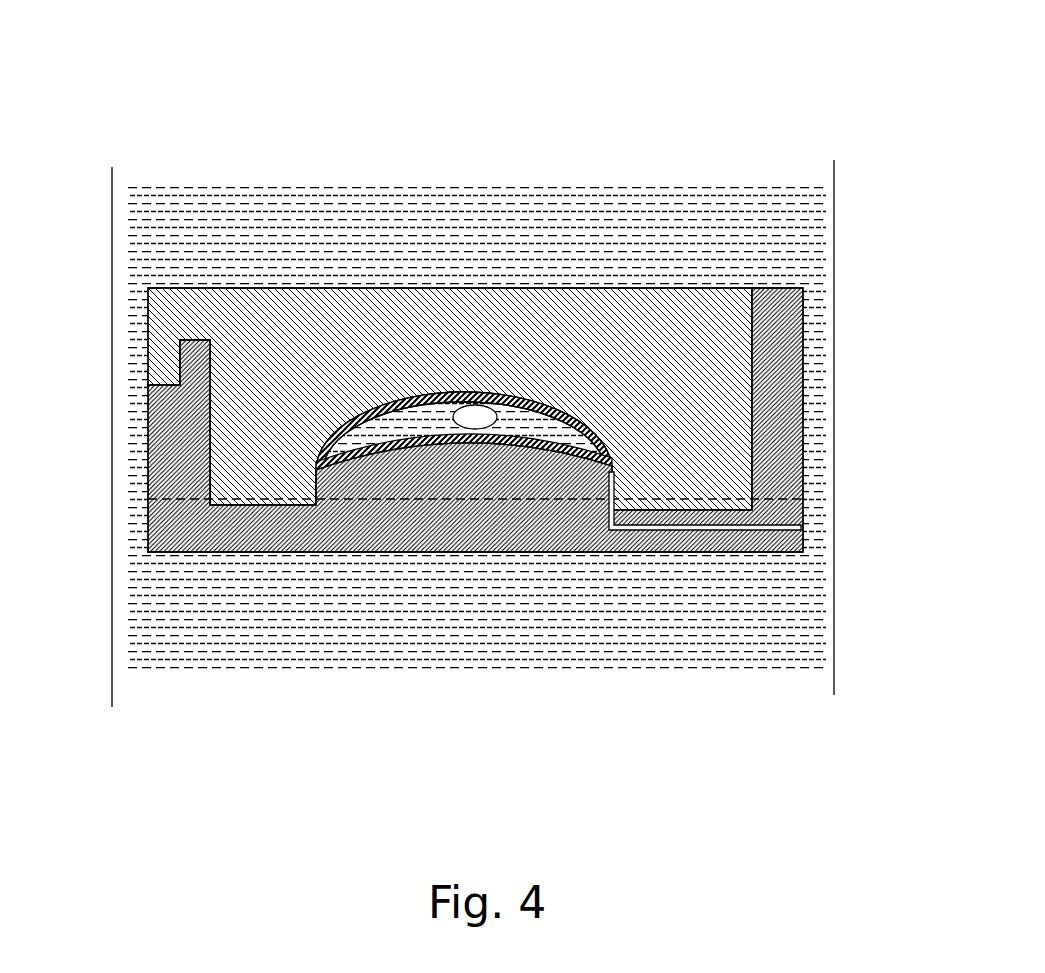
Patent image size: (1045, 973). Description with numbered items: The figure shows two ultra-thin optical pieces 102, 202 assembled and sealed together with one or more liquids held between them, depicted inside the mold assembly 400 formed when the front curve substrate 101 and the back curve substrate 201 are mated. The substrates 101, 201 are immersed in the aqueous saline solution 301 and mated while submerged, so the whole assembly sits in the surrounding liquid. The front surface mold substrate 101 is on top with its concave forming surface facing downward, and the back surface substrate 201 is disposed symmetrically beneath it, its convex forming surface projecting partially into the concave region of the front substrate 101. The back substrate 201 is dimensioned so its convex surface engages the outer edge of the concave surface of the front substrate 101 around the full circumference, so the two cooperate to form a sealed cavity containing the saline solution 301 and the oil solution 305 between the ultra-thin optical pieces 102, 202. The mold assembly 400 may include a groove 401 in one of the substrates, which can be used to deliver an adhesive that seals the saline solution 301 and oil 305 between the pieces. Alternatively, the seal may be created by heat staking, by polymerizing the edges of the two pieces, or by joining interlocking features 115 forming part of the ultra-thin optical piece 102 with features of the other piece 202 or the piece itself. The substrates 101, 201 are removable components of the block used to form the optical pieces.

The mold assembly 400 is at (60, 344).
The front surface mold substrate 101 is at (467, 350).
The ultra-thin optical piece 102 is at (572, 415).
The interlocking features 115 is at (583, 418).
The back surface substrate 201 is at (493, 518).
The ultra-thin optical piece 202 is at (515, 443).
The aqueous solution 301 is at (416, 412).
The oil solution 305 is at (475, 418).
The groove 401 is at (712, 528).